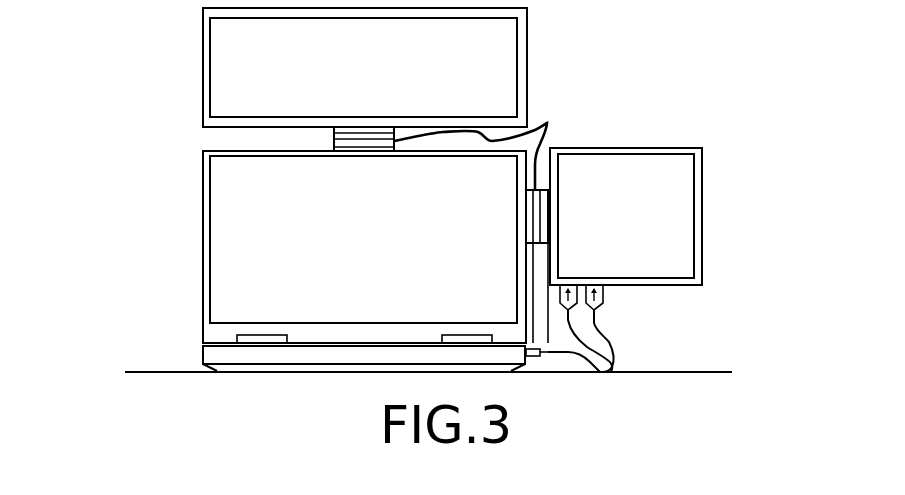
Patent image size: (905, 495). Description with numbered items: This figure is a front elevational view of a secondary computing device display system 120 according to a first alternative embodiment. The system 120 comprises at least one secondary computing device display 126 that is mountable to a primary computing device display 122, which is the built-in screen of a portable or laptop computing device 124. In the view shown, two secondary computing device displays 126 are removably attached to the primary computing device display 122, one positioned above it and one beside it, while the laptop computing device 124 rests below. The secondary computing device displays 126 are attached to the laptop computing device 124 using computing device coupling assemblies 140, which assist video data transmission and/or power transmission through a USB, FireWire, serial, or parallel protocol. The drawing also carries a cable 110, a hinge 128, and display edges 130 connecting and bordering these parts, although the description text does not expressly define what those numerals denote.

The cable 110 is at (488, 218).
The display system 120 is at (112, 261).
The primary display 122 is at (186, 177).
The base 124 is at (186, 352).
The auxiliary display 126 is at (570, 64).
The hinge 128 is at (203, 149).
The display edge 130 is at (203, 290).
The connector cable 140 is at (604, 333).